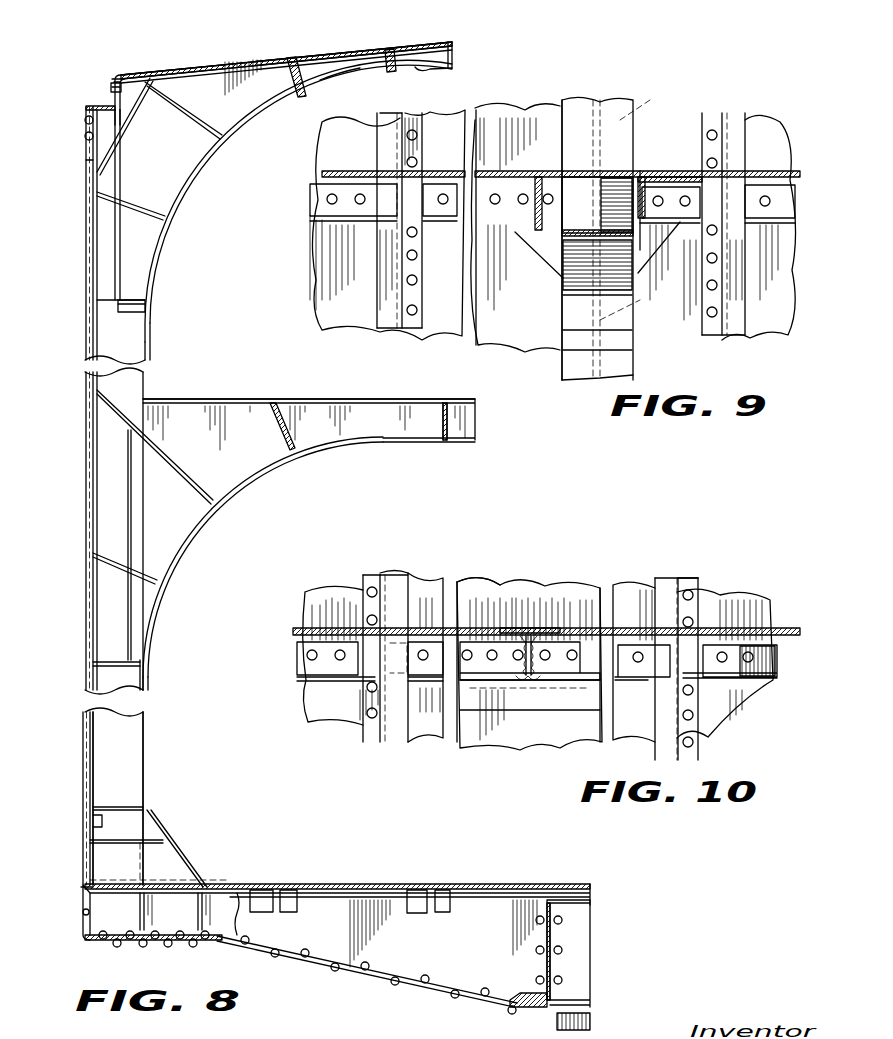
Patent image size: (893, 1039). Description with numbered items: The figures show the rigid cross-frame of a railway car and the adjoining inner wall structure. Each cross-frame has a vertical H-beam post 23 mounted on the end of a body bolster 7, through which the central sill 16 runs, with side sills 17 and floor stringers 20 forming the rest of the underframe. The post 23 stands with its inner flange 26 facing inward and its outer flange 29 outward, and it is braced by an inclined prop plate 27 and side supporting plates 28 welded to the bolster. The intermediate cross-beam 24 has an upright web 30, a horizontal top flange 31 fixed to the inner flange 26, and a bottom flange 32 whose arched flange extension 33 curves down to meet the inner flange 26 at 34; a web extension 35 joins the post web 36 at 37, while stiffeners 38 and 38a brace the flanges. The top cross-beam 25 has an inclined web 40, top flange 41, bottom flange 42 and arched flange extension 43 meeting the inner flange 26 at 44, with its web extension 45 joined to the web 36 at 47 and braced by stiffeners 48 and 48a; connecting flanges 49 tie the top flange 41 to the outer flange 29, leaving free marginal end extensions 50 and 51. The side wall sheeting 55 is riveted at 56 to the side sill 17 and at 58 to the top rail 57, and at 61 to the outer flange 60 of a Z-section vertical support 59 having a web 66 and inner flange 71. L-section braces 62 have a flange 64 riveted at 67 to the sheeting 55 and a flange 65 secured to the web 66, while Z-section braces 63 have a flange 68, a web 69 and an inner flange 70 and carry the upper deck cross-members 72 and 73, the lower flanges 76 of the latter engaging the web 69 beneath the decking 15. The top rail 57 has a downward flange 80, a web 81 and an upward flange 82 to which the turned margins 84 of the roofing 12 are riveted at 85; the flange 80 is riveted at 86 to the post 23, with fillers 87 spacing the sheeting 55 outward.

In FIG. 8, the body bolster 7 is at (222, 928).
In FIG. 8, the roofing structure 12 is at (258, 62).
In FIG. 9, the upper decking 15 is at (434, 165).
In FIG. 10, the upper decking 15 is at (295, 628).
In FIG. 8, the central sill 16 is at (566, 946).
In FIG. 8, the side sill 17 is at (80, 888).
In FIG. 8, the floor stringer 20 is at (277, 913).
In FIG. 8, the vertical H-beam post 23 is at (158, 728).
In FIG. 9, the vertical H-beam post 23 is at (628, 92).
In FIG. 8, the intermediate cross-beam 24 is at (408, 396).
In FIG. 9, the intermediate cross-beam 24 is at (614, 160).
In FIG. 8, the top cross-beam 25 is at (352, 48).
In FIG. 8, the inner flange 26 is at (148, 340).
In FIG. 8, the inclined stiffener or prop plate 27 is at (167, 830).
In FIG. 8, the side supporting plate 28 is at (165, 870).
In FIG. 8, the outer flange 29 is at (92, 824).
In FIG. 8, the web 30 is at (364, 422).
In FIG. 9, the web 30 is at (597, 205).
In FIG. 8, the top flange 31 is at (310, 398).
In FIG. 9, the top flange 31 is at (568, 168).
In FIG. 8, the bottom flange 32 is at (442, 442).
In FIG. 9, the bottom flange 32 is at (606, 260).
In FIG. 8, the arched flange extension 33 is at (258, 470).
In FIG. 9, the arched flange extension 33 is at (566, 318).
In FIG. 8, the junction of flange extension and inner flange 34 is at (147, 668).
In FIG. 8, the web extension 35 is at (165, 540).
In FIG. 9, the web extension 35 is at (600, 320).
In FIG. 8, the web 36 is at (108, 258).
In FIG. 9, the web 36 is at (640, 120).
In FIG. 8, the joint of web extension and post web 37 is at (132, 504).
In FIG. 8, the stiffener 38 is at (270, 423).
In FIG. 8, the stiffener 38a is at (478, 408).
In FIG. 8, the web 40 is at (356, 74).
In FIG. 8, the top flange 41 is at (455, 52).
In FIG. 8, the bottom flange 42 is at (422, 70).
In FIG. 8, the arched flange extension 43 is at (190, 172).
In FIG. 8, the junction of flange extension and inner flange 44 is at (146, 312).
In FIG. 8, the web extension 45 is at (156, 256).
In FIG. 8, the joint of web extension and post web 47 is at (150, 198).
In FIG. 8, the stiffener 48 is at (288, 74).
In FIG. 8, the stiffener 48a is at (392, 52).
In FIG. 8, the connecting flange 49 is at (140, 96).
In FIG. 8, the free marginal end extension 50 is at (120, 78).
In FIG. 8, the free marginal end extension 51 is at (110, 138).
In FIG. 8, the metal sheeting 55 is at (85, 480).
In FIG. 9, the metal sheeting 55 is at (510, 120).
In FIG. 10, the metal sheeting 55 is at (500, 582).
In FIG. 8, the rivets 56 is at (85, 880).
In FIG. 8, the top rail 57 is at (77, 111).
In FIG. 8, the rivets 58 is at (85, 162).
In FIG. 9, the Z-section vertical support 59 is at (381, 338).
In FIG. 10, the Z-section vertical support 59 is at (402, 564).
In FIG. 9, the outer flange 60 is at (710, 118).
In FIG. 10, the outer flange 60 is at (368, 580).
In FIG. 9, the rivets 61 is at (406, 280).
In FIG. 10, the rivets 61 is at (367, 620).
In FIG. 9, the horizontal brace 62 is at (316, 222).
In FIG. 10, the horizontal brace 62 is at (289, 657).
In FIG. 10, the horizontal brace 63 is at (481, 719).
In FIG. 9, the flange 64 is at (482, 192).
In FIG. 10, the flange 64 is at (306, 668).
In FIG. 9, the flange 65 is at (360, 224).
In FIG. 10, the flange 65 is at (320, 690).
In FIG. 9, the web 66 is at (403, 330).
In FIG. 10, the web 66 is at (382, 578).
In FIG. 9, the rivets 67 is at (360, 192).
In FIG. 10, the rivets 67 is at (426, 650).
In FIG. 10, the flange 68 is at (548, 648).
In FIG. 10, the web 69 is at (486, 674).
In FIG. 10, the inner flange 70 is at (592, 718).
In FIG. 9, the inner flange 71 is at (742, 125).
In FIG. 10, the inner flange 71 is at (398, 582).
In FIG. 9, the cross-member 72 is at (540, 182).
In FIG. 9, the cross-member 73 is at (560, 222).
In FIG. 10, the cross-member 73 is at (546, 700).
In FIG. 10, the lower flange 76 is at (520, 670).
In FIG. 8, the flange 80 is at (85, 138).
In FIG. 8, the web 81 is at (110, 96).
In FIG. 8, the flange 82 is at (110, 86).
In FIG. 8, the turned side marginal portion 84 is at (116, 74).
In FIG. 8, the rivets 85 is at (112, 80).
In FIG. 8, the rivets 86 is at (85, 122).
In FIG. 8, the filler 87 is at (102, 132).